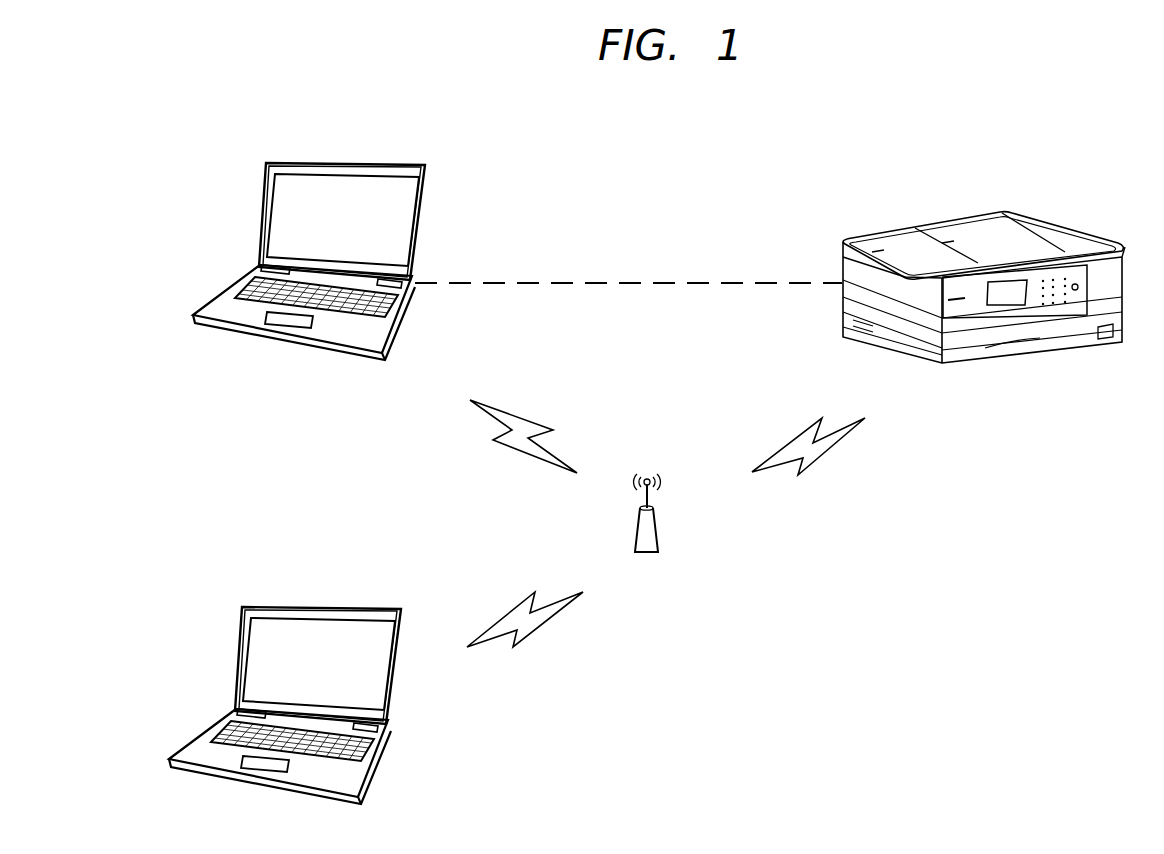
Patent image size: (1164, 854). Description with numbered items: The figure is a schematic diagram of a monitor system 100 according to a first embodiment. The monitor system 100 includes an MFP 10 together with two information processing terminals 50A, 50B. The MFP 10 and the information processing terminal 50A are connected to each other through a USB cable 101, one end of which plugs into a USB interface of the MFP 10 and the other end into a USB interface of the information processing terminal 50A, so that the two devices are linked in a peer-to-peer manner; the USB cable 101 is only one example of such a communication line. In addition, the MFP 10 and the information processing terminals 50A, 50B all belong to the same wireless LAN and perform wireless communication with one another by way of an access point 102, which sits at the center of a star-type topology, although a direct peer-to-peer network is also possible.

The monitor system 100 is at (767, 140).
The MFP 10 is at (1030, 210).
The information processing terminal 50A is at (387, 160).
The information processing terminal 50B is at (365, 603).
The USB cable 101 is at (634, 283).
The access point 102 is at (678, 470).